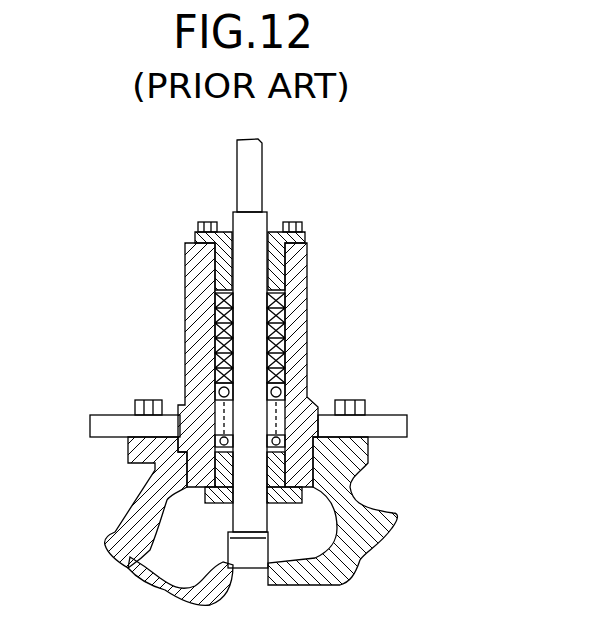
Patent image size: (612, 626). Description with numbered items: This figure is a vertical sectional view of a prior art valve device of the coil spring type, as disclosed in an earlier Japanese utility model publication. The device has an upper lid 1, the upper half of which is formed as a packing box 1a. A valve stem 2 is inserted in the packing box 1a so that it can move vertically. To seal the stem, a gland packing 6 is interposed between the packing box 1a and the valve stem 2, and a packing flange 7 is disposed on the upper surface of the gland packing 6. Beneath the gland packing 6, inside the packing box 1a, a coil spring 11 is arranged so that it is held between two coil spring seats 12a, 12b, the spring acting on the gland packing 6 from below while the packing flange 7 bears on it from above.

The upper lid 1 is at (352, 445).
The packing box 1a is at (305, 307).
The valve stem 2 is at (257, 523).
The gland packing 6 is at (300, 347).
The packing flange 7 is at (305, 236).
The coil spring 11 is at (290, 382).
The coil spring seat 12a is at (300, 398).
The coil spring seat 12b is at (340, 431).